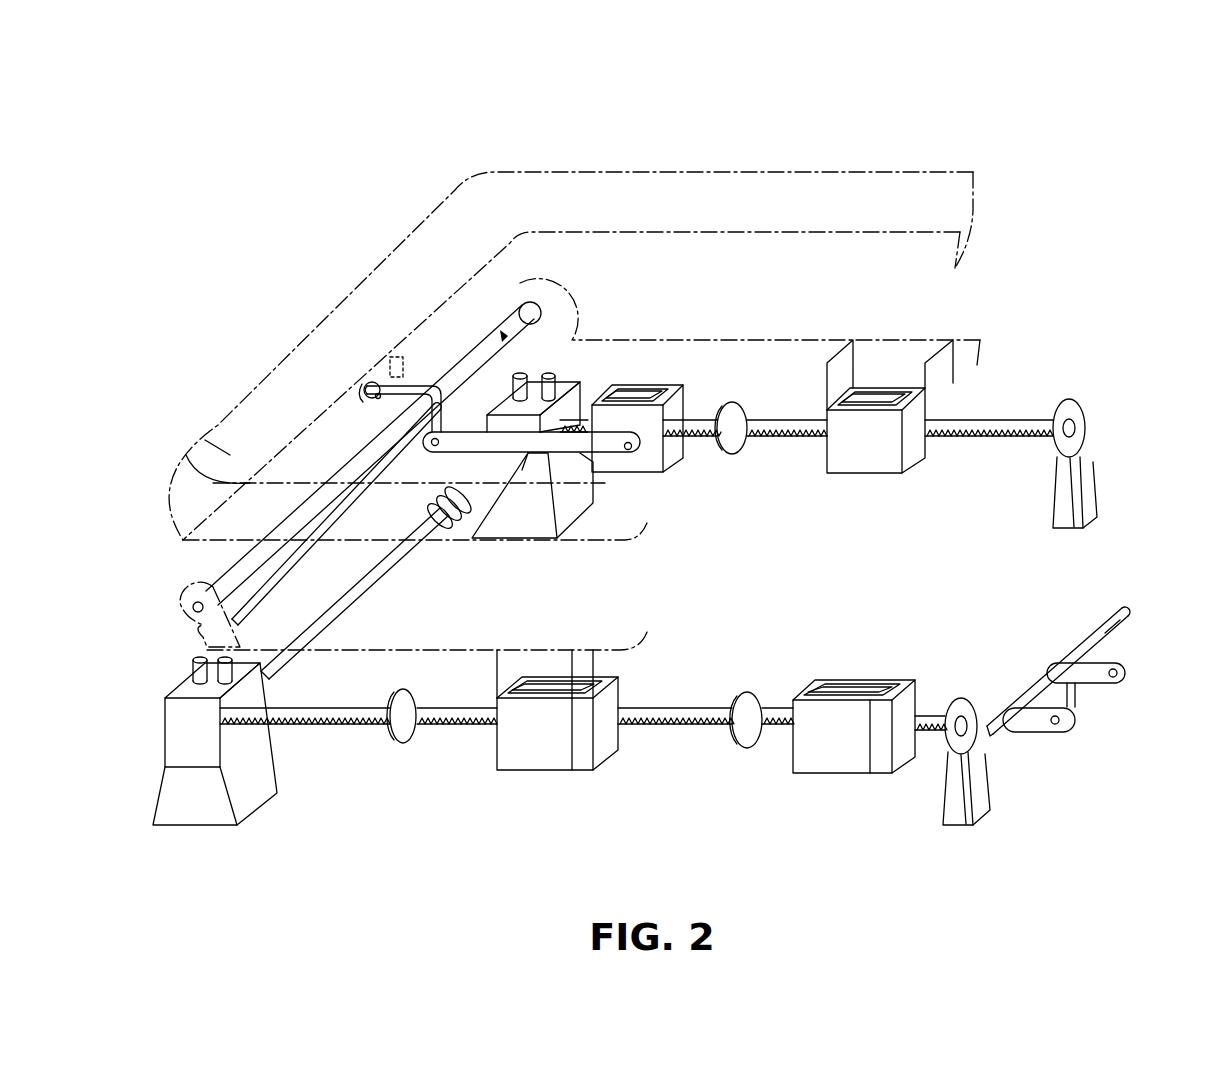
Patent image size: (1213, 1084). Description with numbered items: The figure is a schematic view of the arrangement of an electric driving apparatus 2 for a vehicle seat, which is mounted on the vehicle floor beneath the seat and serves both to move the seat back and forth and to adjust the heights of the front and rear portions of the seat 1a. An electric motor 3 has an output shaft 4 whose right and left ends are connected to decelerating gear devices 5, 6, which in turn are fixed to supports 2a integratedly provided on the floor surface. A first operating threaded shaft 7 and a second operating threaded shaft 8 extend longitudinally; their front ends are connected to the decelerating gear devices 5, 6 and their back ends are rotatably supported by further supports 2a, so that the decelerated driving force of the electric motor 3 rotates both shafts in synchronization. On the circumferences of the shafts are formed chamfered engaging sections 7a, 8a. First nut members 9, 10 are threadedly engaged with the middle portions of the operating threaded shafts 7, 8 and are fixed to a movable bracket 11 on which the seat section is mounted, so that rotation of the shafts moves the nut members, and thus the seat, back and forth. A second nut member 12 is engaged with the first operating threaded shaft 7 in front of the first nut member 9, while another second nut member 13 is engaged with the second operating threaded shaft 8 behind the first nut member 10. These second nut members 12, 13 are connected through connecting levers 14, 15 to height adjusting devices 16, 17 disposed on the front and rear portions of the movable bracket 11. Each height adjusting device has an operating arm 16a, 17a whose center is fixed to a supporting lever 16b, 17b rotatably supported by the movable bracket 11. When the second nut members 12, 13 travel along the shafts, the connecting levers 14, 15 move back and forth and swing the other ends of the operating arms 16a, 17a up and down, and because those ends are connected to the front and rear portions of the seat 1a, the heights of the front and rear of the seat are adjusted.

The seat 1a is at (228, 447).
The electric driving apparatus 2 is at (962, 306).
The supports 2a is at (1083, 486).
The electric motor 3 is at (488, 492).
The output shaft 4 is at (360, 587).
The decelerating gear device 5 is at (567, 383).
The decelerating gear device 6 is at (188, 728).
The first operating threaded shaft 7 is at (1000, 440).
The engaging section 7a is at (1003, 418).
The second operating threaded shaft 8 is at (673, 732).
The engaging section 8a is at (683, 715).
The first nut member 9 is at (868, 450).
The first nut member 10 is at (545, 743).
The movable bracket 11 is at (475, 623).
The second nut member 12 is at (648, 453).
The second nut member 13 is at (833, 755).
The connecting lever 14 is at (607, 440).
The connecting lever 15 is at (1032, 720).
The height adjusting device 16 is at (411, 380).
The operating arm 16a is at (440, 395).
The supporting lever 16b is at (490, 348).
The height adjusting device 17 is at (1021, 680).
The operating arm 17a is at (1093, 672).
The supporting lever 17b is at (1107, 630).